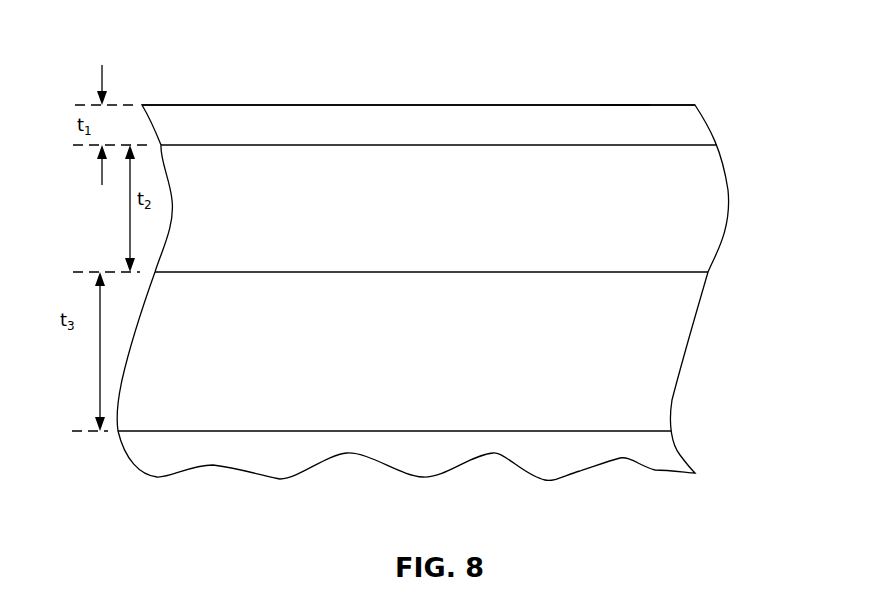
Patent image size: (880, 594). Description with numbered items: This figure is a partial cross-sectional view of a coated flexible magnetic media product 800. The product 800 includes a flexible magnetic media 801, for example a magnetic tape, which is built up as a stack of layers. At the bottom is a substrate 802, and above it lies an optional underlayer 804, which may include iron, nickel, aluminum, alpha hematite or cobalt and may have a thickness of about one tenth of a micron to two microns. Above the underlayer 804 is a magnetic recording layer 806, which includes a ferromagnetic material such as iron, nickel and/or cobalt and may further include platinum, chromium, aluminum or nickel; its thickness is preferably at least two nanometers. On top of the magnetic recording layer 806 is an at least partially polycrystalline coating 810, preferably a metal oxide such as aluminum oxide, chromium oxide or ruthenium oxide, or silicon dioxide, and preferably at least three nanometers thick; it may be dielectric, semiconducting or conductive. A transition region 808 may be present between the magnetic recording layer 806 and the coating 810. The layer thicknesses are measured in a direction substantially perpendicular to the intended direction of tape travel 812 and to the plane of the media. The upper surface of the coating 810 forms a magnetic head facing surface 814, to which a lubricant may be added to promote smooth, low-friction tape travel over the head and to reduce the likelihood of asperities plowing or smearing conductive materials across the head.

The product 800 is at (58, 74).
The flexible magnetic media 801 is at (823, 385).
The substrate 802 is at (680, 449).
The underlayer 804 is at (689, 336).
The magnetic recording layer 806 is at (726, 222).
The transition region 808 is at (736, 125).
The at least partially polycrystalline coating 810 is at (706, 113).
The intended direction of tape travel 812 is at (547, 81).
The magnetic head facing surface 814 is at (624, 96).